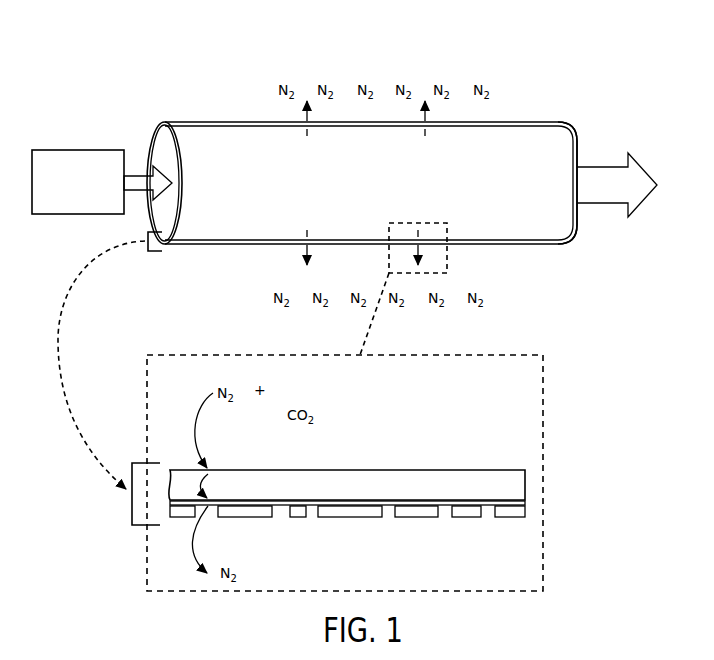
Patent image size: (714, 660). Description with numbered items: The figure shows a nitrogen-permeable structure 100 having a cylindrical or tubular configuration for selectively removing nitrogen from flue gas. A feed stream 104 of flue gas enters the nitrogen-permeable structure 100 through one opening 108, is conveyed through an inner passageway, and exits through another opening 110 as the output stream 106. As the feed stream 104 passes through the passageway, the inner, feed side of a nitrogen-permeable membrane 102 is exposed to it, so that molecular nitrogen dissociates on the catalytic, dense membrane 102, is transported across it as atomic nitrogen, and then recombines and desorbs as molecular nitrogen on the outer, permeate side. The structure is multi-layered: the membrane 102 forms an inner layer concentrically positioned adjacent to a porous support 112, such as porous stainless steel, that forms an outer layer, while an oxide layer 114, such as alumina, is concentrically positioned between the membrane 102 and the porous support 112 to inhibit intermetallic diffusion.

The nitrogen-permeable structure 100 is at (365, 138).
The nitrogen-permeable membrane 102 is at (520, 483).
The feed stream 104 is at (78, 148).
The output stream 106 is at (610, 166).
The opening 108 is at (160, 150).
The opening 110 is at (578, 136).
The porous support 112 is at (515, 511).
The oxide layer 114 is at (525, 503).